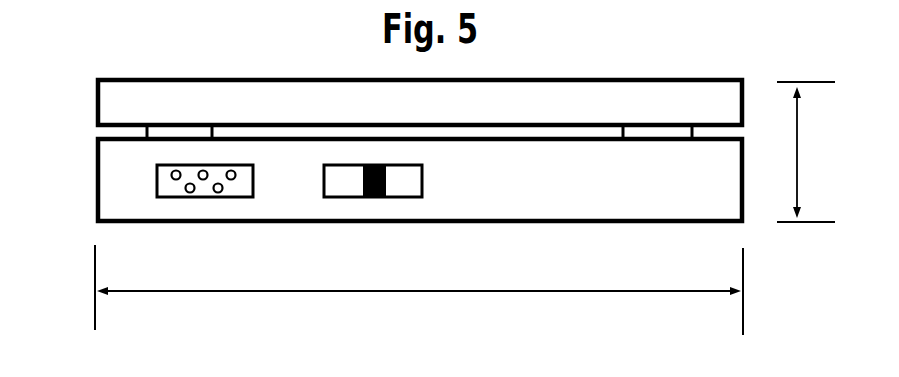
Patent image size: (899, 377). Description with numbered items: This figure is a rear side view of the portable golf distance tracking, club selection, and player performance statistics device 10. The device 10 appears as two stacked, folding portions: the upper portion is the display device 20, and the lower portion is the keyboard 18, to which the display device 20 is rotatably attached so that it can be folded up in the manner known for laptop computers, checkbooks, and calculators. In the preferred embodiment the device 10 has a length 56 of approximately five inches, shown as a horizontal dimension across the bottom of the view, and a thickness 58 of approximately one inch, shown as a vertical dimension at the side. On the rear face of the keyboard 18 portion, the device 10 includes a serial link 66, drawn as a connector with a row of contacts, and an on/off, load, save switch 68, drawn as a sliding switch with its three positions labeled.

The portable golf distance tracking, club selection, and player performance statisti 10 is at (78, 183).
The keyboard 18 is at (585, 203).
The display device 20 is at (588, 92).
The length 56 is at (419, 290).
The thickness 58 is at (807, 152).
The serial link 66 is at (231, 190).
The on/off, load, save switch 68 is at (378, 200).